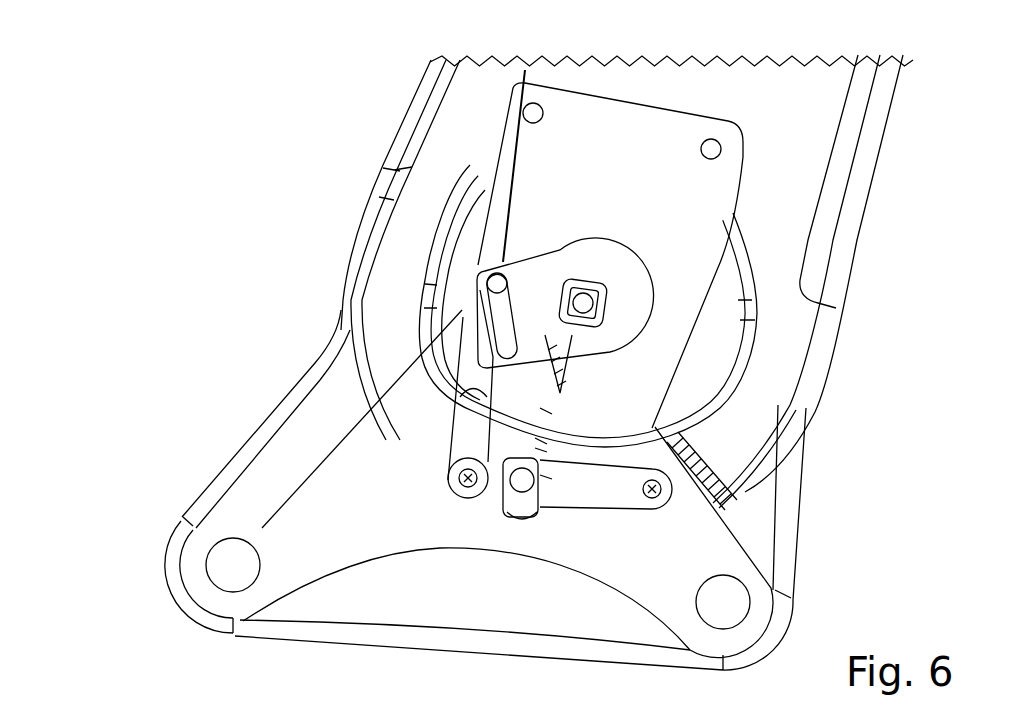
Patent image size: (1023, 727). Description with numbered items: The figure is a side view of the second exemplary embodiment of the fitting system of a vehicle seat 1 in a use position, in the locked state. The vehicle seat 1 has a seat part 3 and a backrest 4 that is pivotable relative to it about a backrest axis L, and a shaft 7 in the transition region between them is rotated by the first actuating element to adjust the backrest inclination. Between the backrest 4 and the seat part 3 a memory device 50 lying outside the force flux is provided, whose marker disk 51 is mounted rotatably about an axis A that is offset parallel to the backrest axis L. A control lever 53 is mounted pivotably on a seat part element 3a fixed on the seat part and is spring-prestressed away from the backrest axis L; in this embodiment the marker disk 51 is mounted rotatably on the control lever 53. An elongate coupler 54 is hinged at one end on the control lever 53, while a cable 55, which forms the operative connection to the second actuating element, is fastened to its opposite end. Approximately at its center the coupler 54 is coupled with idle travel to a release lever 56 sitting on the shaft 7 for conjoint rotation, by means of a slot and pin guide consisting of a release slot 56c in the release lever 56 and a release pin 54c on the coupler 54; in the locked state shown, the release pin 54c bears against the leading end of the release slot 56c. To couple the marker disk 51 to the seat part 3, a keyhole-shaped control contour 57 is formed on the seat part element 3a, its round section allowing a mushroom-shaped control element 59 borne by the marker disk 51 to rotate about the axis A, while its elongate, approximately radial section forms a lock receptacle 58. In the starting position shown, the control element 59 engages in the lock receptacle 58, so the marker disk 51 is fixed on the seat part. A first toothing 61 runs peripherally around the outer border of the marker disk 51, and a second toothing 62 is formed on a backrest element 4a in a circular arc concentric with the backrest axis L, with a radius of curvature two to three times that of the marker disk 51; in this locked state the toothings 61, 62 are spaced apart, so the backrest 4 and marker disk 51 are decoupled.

The vehicle seat 1 is at (208, 156).
The seat part 3 is at (293, 470).
The seat part element 3a is at (710, 557).
The backrest 4 is at (448, 147).
The backrest element 4a is at (678, 135).
The shaft 7 is at (590, 302).
The backrest axis L is at (605, 297).
The memory device 50 is at (427, 438).
The marker disk 51 is at (540, 450).
The control lever 53 is at (603, 493).
The coupler 54 is at (478, 408).
The release pin 54c is at (488, 281).
The cable 55 is at (517, 103).
The release lever 56 is at (553, 272).
The release slot 56c is at (513, 323).
The control contour 57 is at (496, 474).
The lock receptacle 58 is at (518, 515).
The control element 59 is at (521, 500).
The first toothing 61 is at (540, 441).
The second toothing 62 is at (545, 410).
The axis A is at (545, 477).